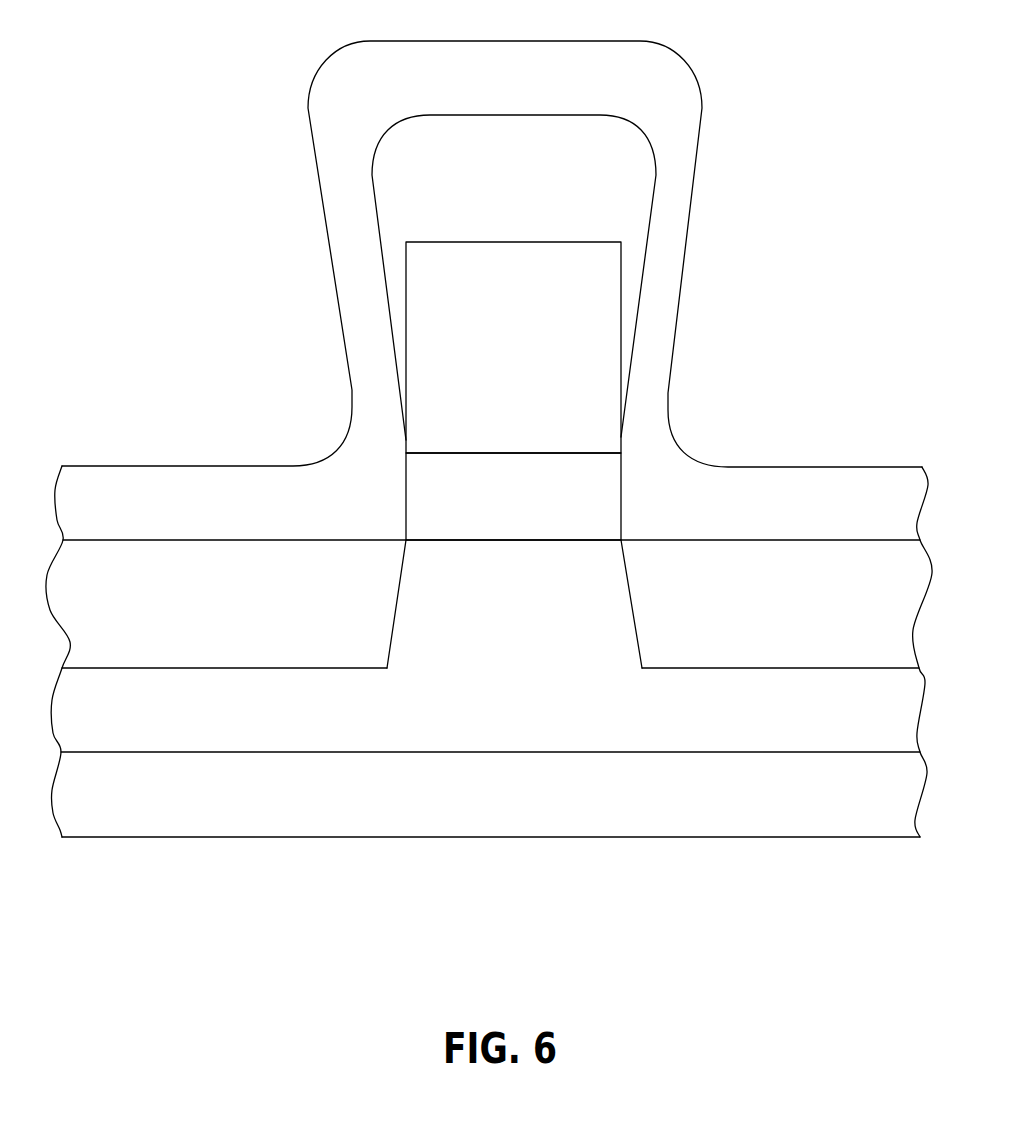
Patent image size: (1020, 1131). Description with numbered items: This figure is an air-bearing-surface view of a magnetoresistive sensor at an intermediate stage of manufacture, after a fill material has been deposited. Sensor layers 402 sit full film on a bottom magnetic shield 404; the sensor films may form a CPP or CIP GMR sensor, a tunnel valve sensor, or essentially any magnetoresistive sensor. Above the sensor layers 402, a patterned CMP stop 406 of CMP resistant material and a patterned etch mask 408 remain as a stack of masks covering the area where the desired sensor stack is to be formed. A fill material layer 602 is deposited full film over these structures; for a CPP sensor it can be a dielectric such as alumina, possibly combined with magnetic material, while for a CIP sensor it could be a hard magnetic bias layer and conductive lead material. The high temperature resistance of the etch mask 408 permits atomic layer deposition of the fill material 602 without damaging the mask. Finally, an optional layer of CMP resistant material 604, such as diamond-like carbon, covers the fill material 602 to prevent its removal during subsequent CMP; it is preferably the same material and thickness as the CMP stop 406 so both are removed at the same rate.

The sensor layers 402 is at (588, 646).
The bottom magnetic shield 404 is at (588, 796).
The CMP stop 406 is at (588, 499).
The etch mask 408 is at (588, 350).
The fill material layer 602 is at (578, 181).
The CMP resistant material 604 is at (589, 83).